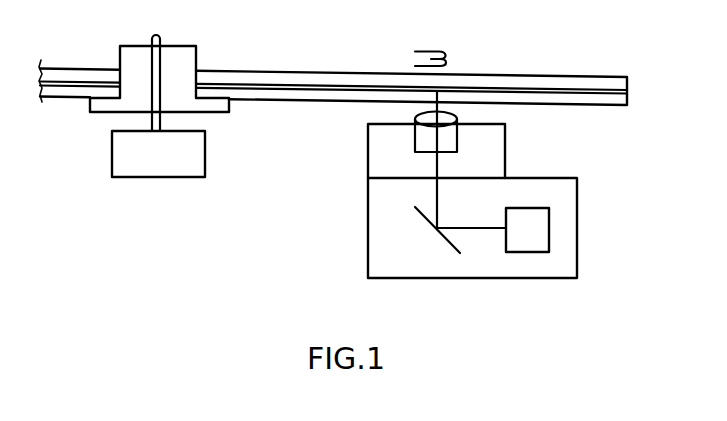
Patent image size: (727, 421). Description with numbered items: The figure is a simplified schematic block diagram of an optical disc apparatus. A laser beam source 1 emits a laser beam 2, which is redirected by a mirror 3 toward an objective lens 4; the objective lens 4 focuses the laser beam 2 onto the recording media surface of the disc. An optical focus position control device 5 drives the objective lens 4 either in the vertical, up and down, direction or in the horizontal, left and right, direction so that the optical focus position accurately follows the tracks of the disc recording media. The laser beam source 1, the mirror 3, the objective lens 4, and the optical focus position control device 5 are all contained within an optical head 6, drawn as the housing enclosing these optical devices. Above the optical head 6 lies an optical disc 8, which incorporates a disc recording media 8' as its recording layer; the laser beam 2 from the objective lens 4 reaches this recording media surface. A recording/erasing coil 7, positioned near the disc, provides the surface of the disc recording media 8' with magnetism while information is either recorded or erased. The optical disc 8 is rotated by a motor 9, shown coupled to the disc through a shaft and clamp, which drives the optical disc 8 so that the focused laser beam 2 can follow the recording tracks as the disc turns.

The laser beam source 1 is at (537, 253).
The laser beam 2 is at (438, 107).
The mirror 3 is at (442, 238).
The objective lens 4 is at (415, 140).
The optical focus position control device 5 is at (488, 161).
The optical head 6 is at (581, 230).
The recording/erasing coil 7 is at (435, 48).
The optical disc 8 is at (333, 56).
The disc recording media 8' is at (345, 50).
The motor 9 is at (175, 167).